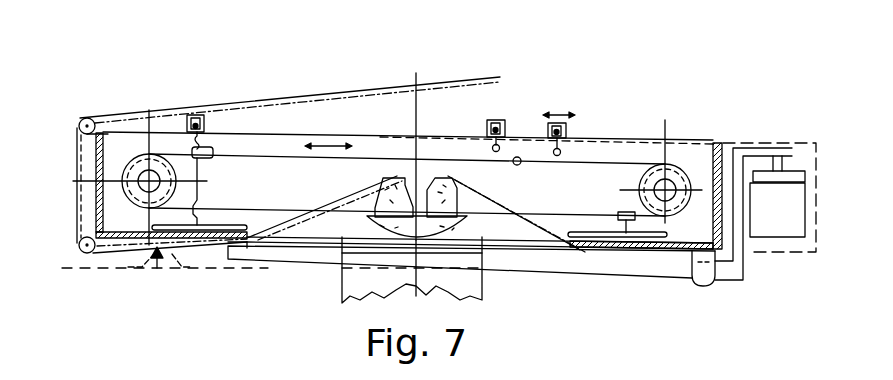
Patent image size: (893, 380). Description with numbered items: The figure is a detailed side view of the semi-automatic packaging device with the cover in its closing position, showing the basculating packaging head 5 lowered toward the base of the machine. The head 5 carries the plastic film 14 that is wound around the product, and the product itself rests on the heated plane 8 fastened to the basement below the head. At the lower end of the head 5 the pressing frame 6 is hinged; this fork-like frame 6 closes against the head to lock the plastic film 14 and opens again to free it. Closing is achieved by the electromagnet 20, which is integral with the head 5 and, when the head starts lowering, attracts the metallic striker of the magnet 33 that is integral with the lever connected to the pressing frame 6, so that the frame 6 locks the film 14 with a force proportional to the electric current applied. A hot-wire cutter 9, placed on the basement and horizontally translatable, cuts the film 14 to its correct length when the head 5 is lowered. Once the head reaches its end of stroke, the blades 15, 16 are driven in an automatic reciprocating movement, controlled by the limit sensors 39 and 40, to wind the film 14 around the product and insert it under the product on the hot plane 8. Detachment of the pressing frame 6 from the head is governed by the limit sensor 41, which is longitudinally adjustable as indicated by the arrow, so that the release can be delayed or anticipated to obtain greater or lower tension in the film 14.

The basculating packaging head 5 is at (100, 160).
The pressing frame 6 is at (607, 267).
The heated plane 8 is at (457, 282).
The hot-wire cutter 9 is at (167, 267).
The plastic film 14 is at (315, 93).
The blade 15 is at (590, 235).
The blade 16 is at (211, 227).
The electromagnet 20 is at (783, 215).
The metallic striker of the magnet 33 is at (773, 174).
The limit sensor 39 is at (195, 124).
The limit sensor 40 is at (497, 121).
The limit sensor 41 is at (572, 115).